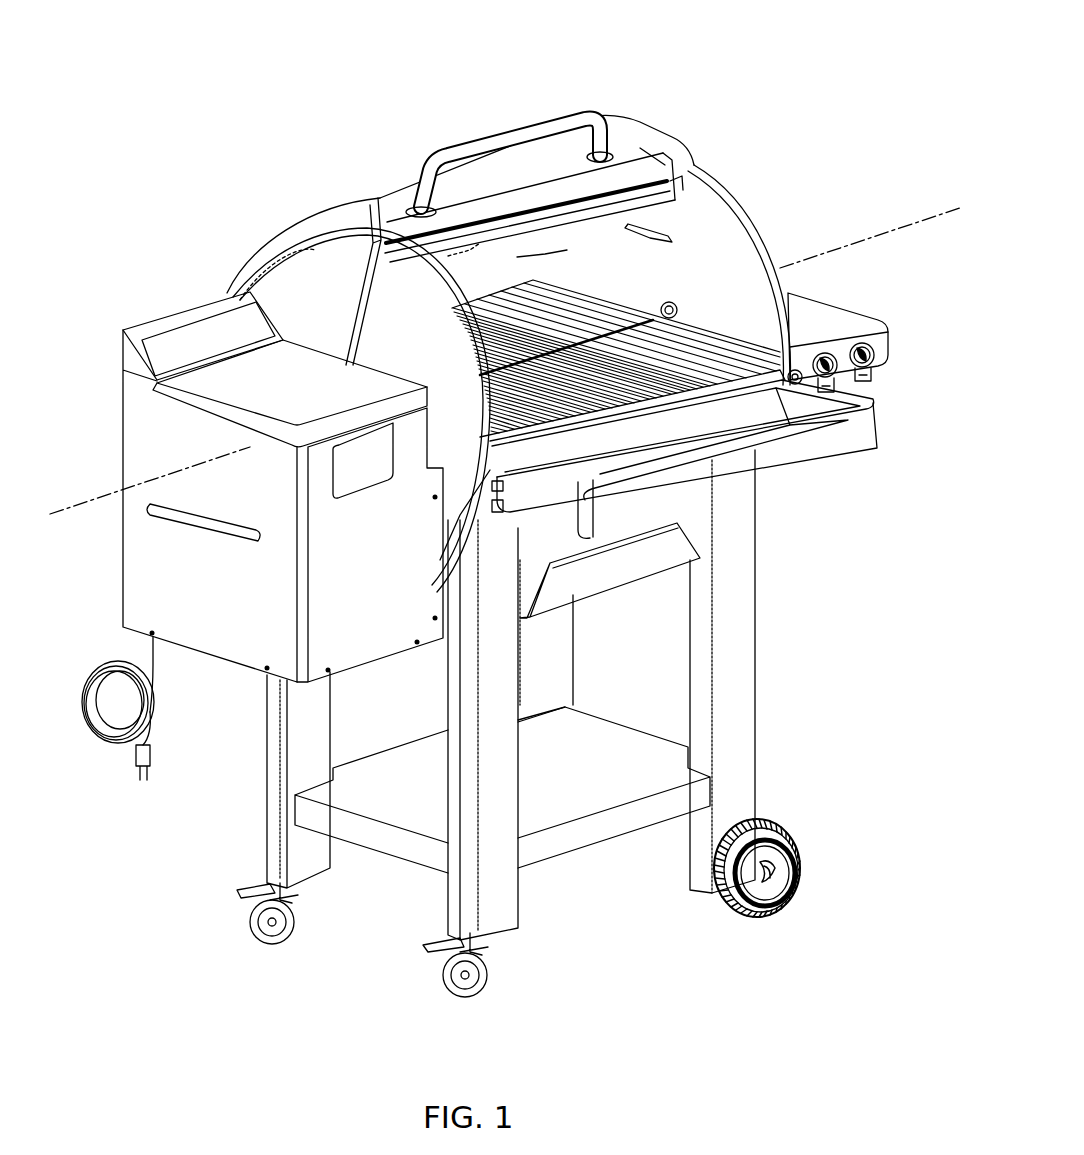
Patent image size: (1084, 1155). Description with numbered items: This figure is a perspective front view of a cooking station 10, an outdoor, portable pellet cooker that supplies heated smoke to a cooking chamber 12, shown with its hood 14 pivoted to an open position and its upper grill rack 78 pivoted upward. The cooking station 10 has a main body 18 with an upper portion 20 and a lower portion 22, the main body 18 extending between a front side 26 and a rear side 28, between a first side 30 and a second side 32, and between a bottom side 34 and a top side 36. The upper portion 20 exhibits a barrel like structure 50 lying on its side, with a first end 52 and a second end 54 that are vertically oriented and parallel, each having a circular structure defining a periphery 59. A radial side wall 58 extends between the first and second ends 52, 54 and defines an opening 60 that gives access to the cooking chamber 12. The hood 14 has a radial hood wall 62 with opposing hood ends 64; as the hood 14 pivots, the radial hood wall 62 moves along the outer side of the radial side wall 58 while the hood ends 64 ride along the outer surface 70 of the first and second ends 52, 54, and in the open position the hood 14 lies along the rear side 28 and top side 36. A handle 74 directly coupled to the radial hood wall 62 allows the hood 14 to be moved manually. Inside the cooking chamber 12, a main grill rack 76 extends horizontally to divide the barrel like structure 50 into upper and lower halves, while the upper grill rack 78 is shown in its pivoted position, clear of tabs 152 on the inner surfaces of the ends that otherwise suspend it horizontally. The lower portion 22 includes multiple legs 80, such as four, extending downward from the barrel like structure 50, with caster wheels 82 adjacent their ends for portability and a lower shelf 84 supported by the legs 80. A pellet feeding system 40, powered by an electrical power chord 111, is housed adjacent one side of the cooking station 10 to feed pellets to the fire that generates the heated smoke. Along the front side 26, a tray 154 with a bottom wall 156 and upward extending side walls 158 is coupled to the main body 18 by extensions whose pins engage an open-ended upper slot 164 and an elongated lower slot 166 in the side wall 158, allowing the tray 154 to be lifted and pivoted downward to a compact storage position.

The cooking station 10 is at (835, 36).
The cooking chamber 12 is at (730, 244).
The hood 14 is at (378, 198).
The main body 18 is at (758, 545).
The upper portion 20 is at (845, 475).
The lower portion 22 is at (826, 631).
The front side 26 is at (876, 546).
The rear side 28 is at (249, 453).
The first side 30 is at (140, 828).
The second side 32 is at (851, 686).
The bottom side 34 is at (611, 968).
The top side 36 is at (462, 98).
The pellet feeding system 40 is at (116, 552).
The barrel like structure 50 is at (709, 182).
The first end 52 is at (400, 318).
The second end 54 is at (700, 236).
The radial side wall 58 is at (522, 257).
The periphery 59 is at (772, 240).
The opening 60 is at (786, 306).
The radial hood wall 62 is at (641, 148).
The hood ends 64 is at (286, 270).
The outer surface 70 is at (416, 350).
The handle 74 is at (576, 118).
The main grill rack 76 is at (692, 350).
The upper grill rack 78 is at (448, 258).
The legs 80 is at (268, 790).
The wheels 82 is at (262, 950).
The lower shelf 84 is at (575, 838).
The electrical power chord 111 is at (116, 668).
The tabs 152 is at (650, 230).
The tray 154 is at (876, 425).
The bottom wall 156 is at (738, 448).
The side walls 158 is at (850, 440).
The upper slot 164 is at (560, 482).
The lower slot 166 is at (505, 520).